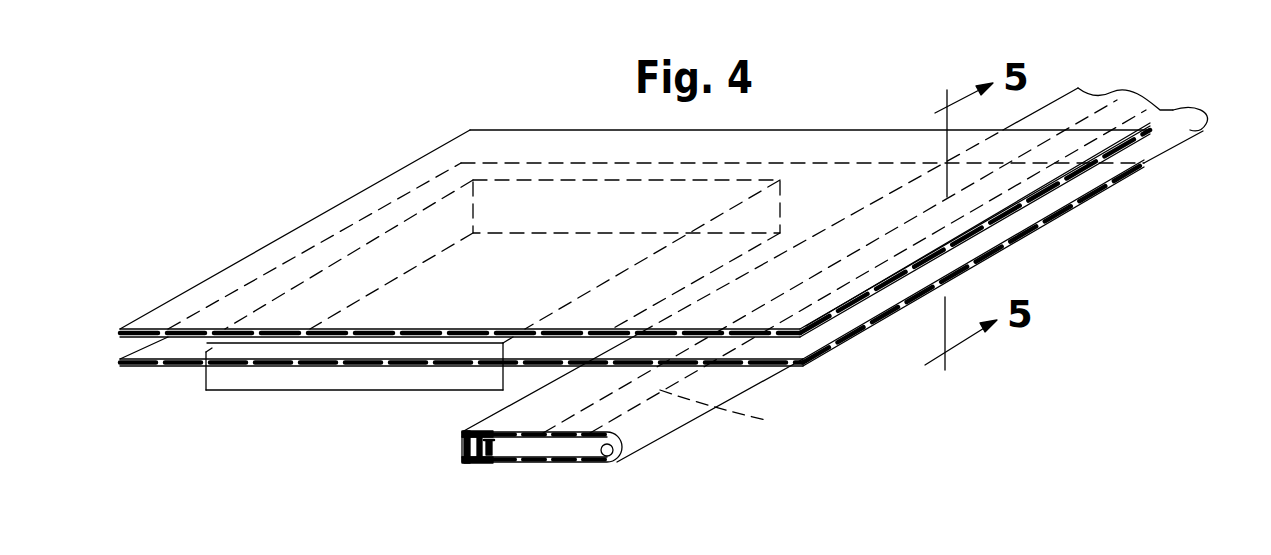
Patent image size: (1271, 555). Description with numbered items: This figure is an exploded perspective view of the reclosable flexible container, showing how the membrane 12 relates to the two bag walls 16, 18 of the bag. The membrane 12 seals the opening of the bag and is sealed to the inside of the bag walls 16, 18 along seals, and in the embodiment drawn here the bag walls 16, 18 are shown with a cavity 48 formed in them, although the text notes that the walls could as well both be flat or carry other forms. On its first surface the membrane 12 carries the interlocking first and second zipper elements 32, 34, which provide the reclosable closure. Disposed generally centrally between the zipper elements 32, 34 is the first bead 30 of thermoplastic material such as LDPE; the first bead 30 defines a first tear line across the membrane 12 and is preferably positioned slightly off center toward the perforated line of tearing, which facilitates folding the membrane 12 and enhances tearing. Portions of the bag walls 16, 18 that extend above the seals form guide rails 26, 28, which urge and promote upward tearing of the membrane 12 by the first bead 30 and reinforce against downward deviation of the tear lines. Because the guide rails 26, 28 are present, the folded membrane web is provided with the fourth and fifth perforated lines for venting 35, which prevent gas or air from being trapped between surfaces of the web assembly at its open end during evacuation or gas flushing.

The membrane 12 is at (548, 452).
The bag wall 16 is at (165, 322).
The bag wall 18 is at (156, 366).
The guide rail 26 is at (1090, 170).
The guide rail 28 is at (1080, 210).
The first bead 30 is at (606, 461).
The first zipper element 32 is at (481, 463).
The second zipper element 34 is at (462, 447).
The perforated lines for venting 35 is at (647, 373).
The cavity 48 is at (256, 378).